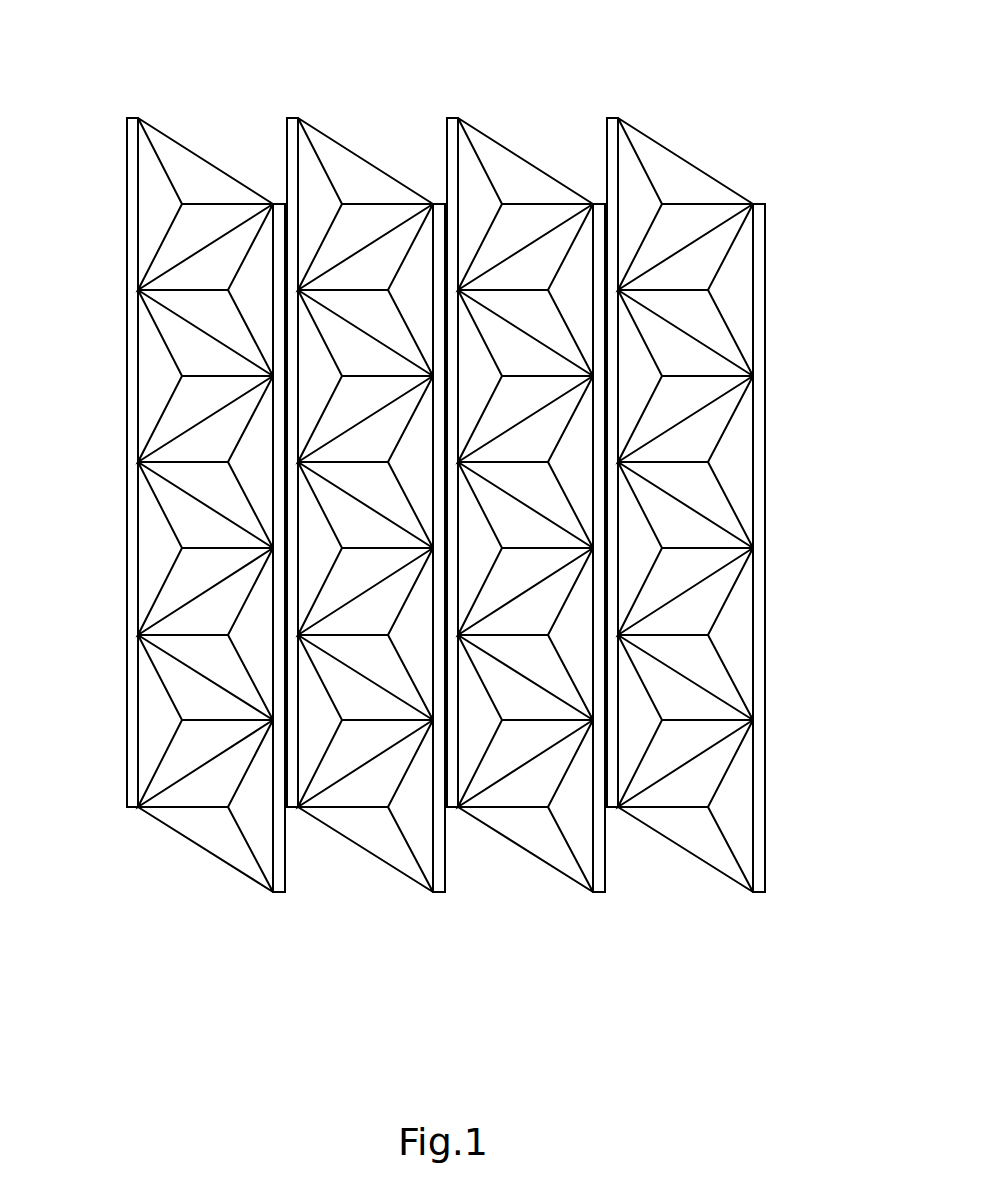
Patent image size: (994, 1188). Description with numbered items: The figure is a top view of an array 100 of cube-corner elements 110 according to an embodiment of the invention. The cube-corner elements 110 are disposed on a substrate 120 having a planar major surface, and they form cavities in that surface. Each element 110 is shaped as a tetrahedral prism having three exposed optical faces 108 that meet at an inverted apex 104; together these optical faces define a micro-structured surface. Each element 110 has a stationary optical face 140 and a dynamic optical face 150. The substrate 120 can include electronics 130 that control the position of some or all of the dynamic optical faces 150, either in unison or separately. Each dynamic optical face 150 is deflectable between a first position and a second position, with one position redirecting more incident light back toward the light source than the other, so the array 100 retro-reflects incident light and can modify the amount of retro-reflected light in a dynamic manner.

The array 100 is at (477, 484).
The inverted apex 104 is at (387, 862).
The exposed optical faces 108 is at (257, 835).
The cube-corner elements 110 is at (547, 848).
The substrate 120 is at (767, 495).
The electronics 130 is at (607, 118).
The stationary optical face 140 is at (516, 462).
The dynamic optical face 150 is at (728, 290).